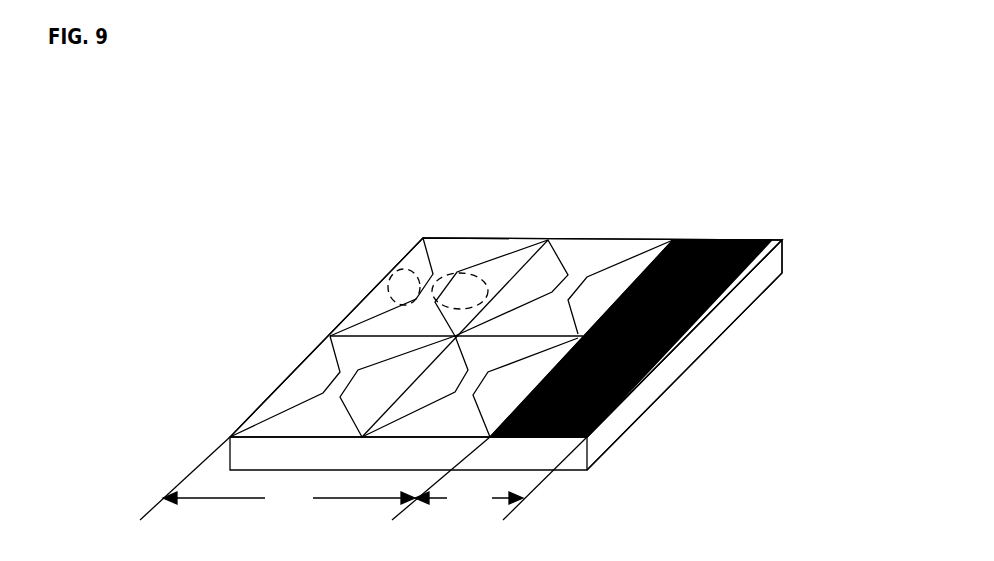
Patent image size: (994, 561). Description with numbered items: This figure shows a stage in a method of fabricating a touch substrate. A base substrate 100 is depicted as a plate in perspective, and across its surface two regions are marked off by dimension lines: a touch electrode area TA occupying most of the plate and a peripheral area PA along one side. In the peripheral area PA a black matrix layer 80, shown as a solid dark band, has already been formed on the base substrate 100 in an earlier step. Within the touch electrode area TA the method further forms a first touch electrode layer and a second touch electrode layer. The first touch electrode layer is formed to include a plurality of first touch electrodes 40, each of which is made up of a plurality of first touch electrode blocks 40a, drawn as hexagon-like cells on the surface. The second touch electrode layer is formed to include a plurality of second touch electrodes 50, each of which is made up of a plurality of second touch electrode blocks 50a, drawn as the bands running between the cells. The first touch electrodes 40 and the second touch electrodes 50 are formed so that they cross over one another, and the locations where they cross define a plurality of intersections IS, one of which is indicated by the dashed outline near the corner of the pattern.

The first touch electrode 40 is at (242, 377).
The second touch electrode 50 is at (487, 222).
The second touch electrode block 50a is at (309, 385).
The first touch electrode block 40a is at (404, 386).
The intersection IS is at (408, 273).
The black matrix layer 80 is at (717, 308).
The base substrate 100 is at (697, 335).
The touch electrode area TA is at (315, 478).
The peripheral area PA is at (501, 478).